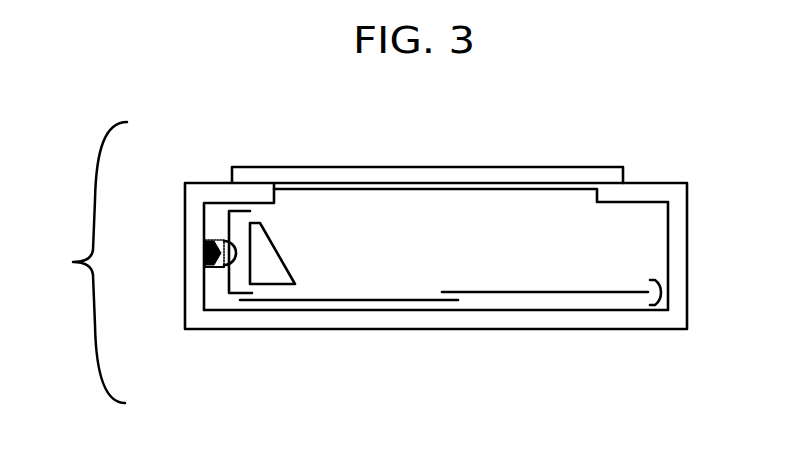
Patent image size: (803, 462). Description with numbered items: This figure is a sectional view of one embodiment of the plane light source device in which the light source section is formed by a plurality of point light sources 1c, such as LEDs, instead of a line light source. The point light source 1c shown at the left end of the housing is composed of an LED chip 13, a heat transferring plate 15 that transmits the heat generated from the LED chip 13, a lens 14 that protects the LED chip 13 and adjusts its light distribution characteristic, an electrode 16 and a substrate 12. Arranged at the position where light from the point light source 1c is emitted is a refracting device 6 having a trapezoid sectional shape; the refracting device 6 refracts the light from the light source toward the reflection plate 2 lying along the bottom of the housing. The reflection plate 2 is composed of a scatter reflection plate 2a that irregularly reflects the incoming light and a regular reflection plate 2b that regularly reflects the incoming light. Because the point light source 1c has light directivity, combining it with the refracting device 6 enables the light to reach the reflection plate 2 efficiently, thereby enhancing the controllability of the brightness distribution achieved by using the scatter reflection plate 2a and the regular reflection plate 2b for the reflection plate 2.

The point light source 1c is at (70, 277).
The reflection plate 2 is at (658, 293).
The scatter reflection plate 2a is at (587, 292).
The regular reflection plate 2b is at (373, 300).
The refracting device 6 is at (267, 255).
The substrate 12 is at (210, 268).
The LED chip 13 is at (224, 264).
The lens 14 is at (242, 211).
The heat transferring plate 15 is at (210, 240).
The electrode 16 is at (214, 268).